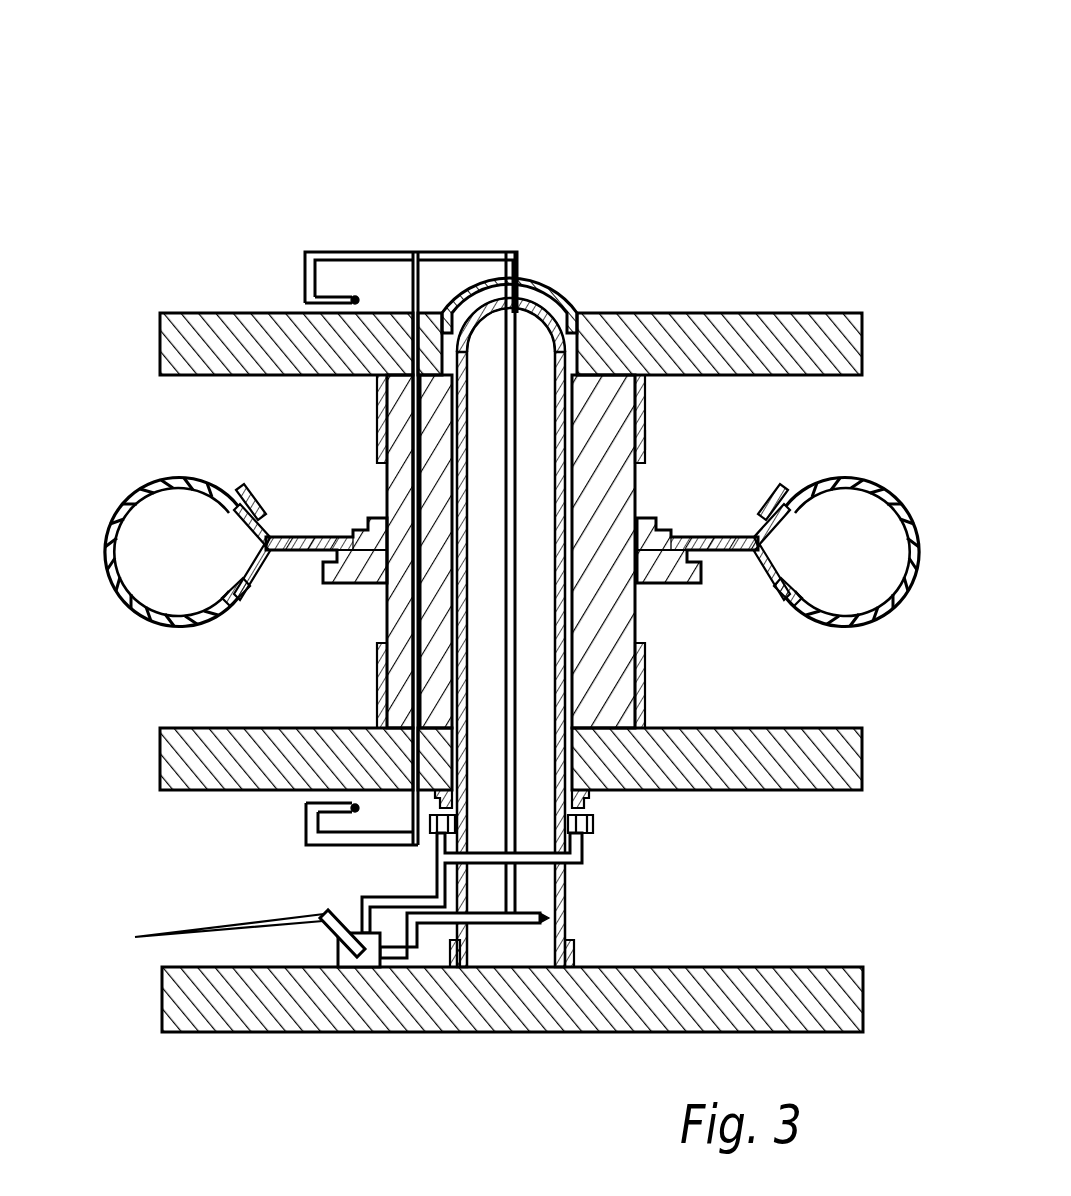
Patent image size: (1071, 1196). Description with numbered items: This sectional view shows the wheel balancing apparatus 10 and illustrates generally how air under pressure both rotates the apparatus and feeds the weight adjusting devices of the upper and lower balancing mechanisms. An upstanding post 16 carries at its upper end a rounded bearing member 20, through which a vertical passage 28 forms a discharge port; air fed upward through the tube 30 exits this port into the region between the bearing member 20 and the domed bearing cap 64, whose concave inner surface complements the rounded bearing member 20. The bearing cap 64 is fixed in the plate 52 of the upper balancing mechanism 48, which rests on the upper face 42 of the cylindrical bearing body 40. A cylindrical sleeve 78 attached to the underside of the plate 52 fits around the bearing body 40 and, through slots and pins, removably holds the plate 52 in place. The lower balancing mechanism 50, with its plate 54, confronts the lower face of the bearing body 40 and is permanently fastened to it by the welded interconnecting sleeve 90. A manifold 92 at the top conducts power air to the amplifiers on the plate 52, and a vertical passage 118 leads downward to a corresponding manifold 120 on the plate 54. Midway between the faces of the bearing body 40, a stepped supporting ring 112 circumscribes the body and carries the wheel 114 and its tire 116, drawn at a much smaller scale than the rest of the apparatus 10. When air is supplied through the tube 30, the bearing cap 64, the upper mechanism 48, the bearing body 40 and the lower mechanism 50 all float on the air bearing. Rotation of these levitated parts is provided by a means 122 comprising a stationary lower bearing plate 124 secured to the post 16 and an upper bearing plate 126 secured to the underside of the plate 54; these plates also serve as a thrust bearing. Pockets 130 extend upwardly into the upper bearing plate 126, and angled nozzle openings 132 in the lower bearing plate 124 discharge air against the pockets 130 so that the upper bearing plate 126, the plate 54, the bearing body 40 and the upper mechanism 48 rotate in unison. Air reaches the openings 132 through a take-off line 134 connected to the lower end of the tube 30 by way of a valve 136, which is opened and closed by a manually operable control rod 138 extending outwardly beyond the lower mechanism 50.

The apparatus 10 is at (622, 80).
The post 16 is at (567, 918).
The bearing member 20 is at (533, 345).
The vertical passage 28 is at (514, 302).
The tube 30 is at (500, 535).
The bearing body 40 is at (642, 497).
The upper face 42 is at (645, 410).
The upper balancing mechanism 48 is at (724, 291).
The lower balancing mechanism 50 is at (787, 812).
The plate or platform 52 is at (806, 313).
The plate or platform 54 is at (815, 792).
The bearing cap 64 is at (520, 282).
The cylindrical sleeve 78 is at (645, 440).
The interconnecting sleeve 90 is at (645, 688).
The manifold 92 is at (459, 238).
The stepped supporting ring 112 is at (670, 530).
The wheel 114 is at (770, 485).
The tire 116 is at (878, 483).
The vertical passage 118 is at (383, 497).
The manifold 120 is at (327, 847).
The means for spinning or rotating 122 is at (636, 846).
The lower bearing plate 124 is at (600, 823).
The upper bearing plate 126 is at (592, 795).
The recesses or pockets 130 is at (443, 795).
The openings 132 is at (447, 827).
The take-off line 134 is at (482, 930).
The valve 136 is at (338, 958).
The control rod 138 is at (250, 923).